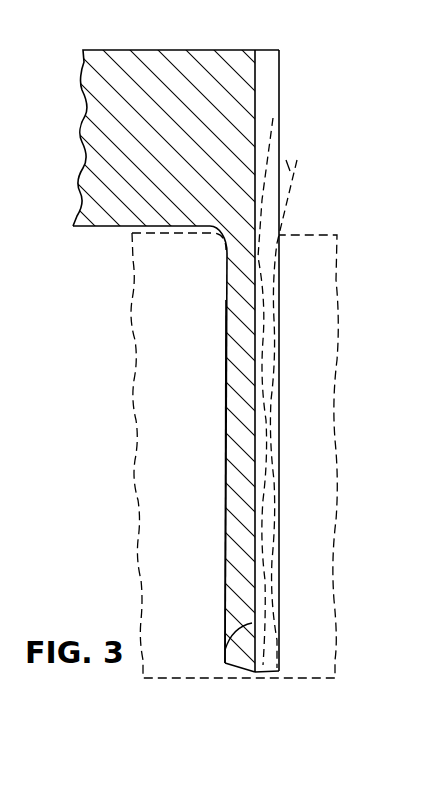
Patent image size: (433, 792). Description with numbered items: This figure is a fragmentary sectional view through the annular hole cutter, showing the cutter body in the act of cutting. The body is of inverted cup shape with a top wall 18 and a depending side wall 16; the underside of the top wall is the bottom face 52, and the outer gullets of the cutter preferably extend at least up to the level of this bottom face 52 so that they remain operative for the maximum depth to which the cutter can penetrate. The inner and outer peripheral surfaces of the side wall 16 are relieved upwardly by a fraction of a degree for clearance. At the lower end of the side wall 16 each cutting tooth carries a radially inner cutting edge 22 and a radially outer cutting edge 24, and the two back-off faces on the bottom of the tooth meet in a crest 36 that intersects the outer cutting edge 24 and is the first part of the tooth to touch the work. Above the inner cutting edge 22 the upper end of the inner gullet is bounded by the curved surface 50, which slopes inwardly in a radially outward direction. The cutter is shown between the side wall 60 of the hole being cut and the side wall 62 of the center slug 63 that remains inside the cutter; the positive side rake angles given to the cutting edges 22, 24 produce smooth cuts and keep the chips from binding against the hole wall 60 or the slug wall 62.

The top wall 18 is at (185, 52).
The bottom face of the top wall 52 is at (115, 226).
The side wall 16 is at (238, 300).
The side wall of the center slug 62 is at (226, 432).
The curved surface 50 is at (230, 633).
The radially inner cutting edge 22 is at (235, 670).
The radially outer cutting edge 24 is at (275, 673).
The crest 36 is at (267, 673).
The side wall of the hole 60 is at (282, 405).
The center slug 63 is at (141, 322).